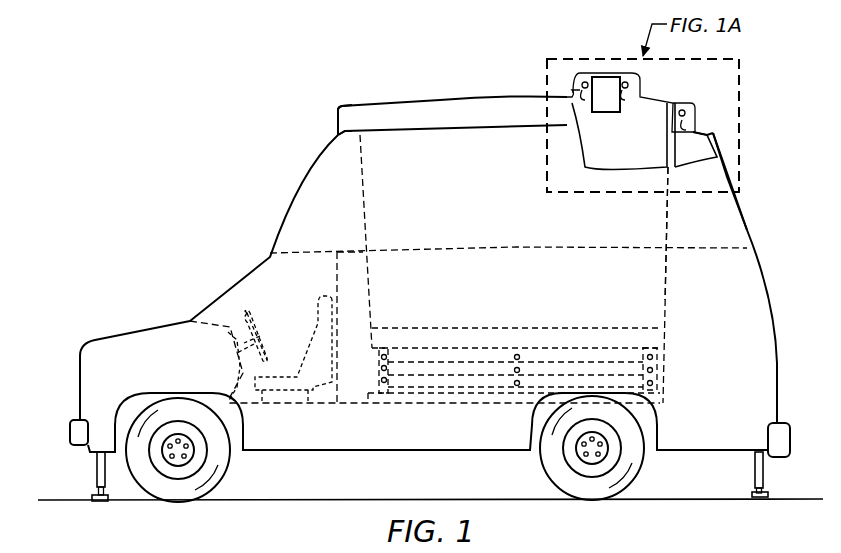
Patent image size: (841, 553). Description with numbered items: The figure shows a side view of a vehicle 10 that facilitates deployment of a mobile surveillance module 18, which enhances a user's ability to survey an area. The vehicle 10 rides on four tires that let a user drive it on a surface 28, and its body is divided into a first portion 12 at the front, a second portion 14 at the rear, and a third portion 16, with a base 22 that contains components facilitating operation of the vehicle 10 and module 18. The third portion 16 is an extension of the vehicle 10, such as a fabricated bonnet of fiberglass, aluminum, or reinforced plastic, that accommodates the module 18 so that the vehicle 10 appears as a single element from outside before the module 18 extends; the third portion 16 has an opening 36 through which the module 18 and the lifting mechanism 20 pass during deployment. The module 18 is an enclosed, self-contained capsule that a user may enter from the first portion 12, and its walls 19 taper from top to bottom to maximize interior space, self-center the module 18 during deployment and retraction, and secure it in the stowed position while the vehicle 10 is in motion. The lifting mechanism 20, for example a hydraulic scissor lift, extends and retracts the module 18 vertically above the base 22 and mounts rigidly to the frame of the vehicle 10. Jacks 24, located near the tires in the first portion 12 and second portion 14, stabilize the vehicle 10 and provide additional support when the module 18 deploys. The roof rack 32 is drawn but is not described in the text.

The vehicle 10 is at (205, 99).
The first portion 12 is at (260, 286).
The second portion 14 is at (752, 292).
The third portion 16 is at (750, 218).
The module 18 is at (673, 273).
The walls 19 is at (367, 217).
The lifting mechanism 20 is at (662, 378).
The base 22 is at (412, 453).
The jacks 24 is at (97, 468).
The surface 28 is at (800, 497).
The roof rack 32 is at (503, 97).
The opening 36 is at (329, 121).